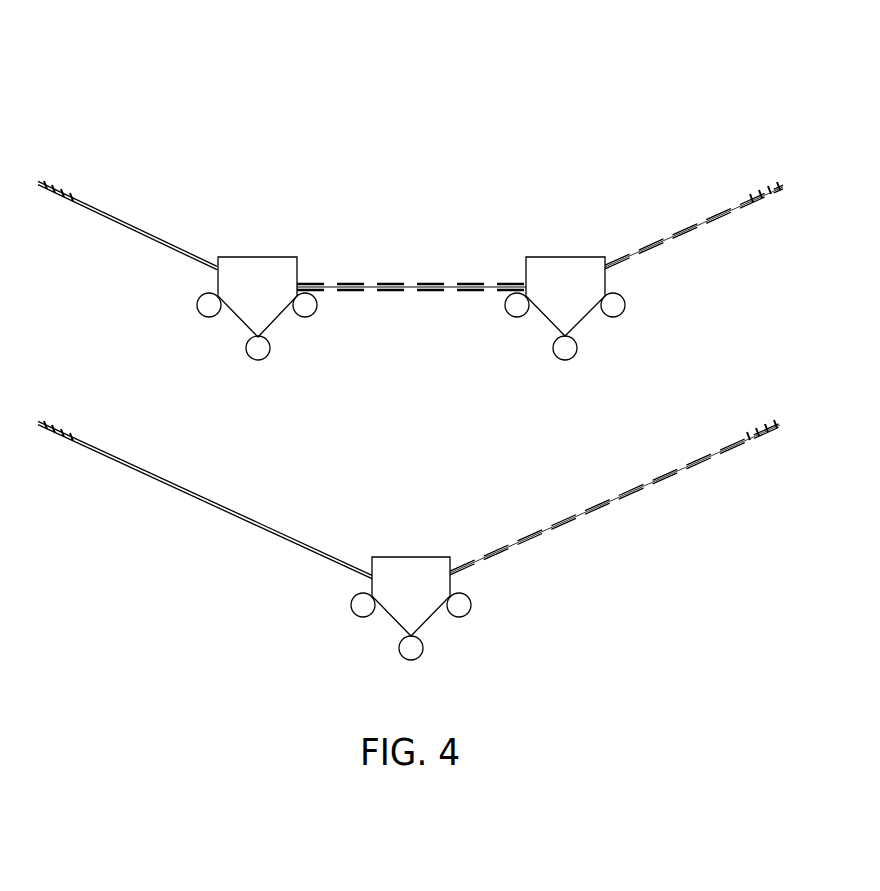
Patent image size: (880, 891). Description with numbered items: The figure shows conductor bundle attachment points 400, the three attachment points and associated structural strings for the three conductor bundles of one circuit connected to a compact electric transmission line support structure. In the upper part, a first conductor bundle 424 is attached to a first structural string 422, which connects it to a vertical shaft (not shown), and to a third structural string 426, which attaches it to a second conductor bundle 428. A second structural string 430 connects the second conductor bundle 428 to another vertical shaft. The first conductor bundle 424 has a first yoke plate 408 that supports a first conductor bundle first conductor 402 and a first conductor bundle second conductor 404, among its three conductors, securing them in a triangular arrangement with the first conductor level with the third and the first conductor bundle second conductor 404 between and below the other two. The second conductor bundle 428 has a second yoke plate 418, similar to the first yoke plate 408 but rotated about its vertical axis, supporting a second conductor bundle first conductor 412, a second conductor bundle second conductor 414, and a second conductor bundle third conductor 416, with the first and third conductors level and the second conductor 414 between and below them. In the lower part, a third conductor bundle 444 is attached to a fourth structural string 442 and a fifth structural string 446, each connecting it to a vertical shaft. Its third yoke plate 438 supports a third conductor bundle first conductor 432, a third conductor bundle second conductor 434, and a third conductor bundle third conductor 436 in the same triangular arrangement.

The conductor bundle attachment points 400 is at (203, 110).
The first conductor bundle first conductor 402 is at (208, 318).
The first conductor bundle second conductor 404 is at (259, 361).
The first yoke plate 408 is at (257, 257).
The second conductor bundle first conductor 412 is at (516, 318).
The second conductor bundle second conductor 414 is at (565, 361).
The second conductor bundle third conductor 416 is at (614, 318).
The second yoke plate 418 is at (565, 257).
The first structural string 422 is at (169, 243).
The first conductor bundle 424 is at (298, 250).
The third structural string 426 is at (413, 283).
The second conductor bundle 428 is at (523, 247).
The second structural string 430 is at (680, 230).
The third conductor bundle first conductor 432 is at (362, 618).
The third conductor bundle second conductor 434 is at (411, 661).
The third conductor bundle third conductor 436 is at (460, 618).
The third yoke plate 438 is at (410, 557).
The fourth structural string 442 is at (277, 538).
The third conductor bundle 444 is at (437, 542).
The fifth structural string 446 is at (548, 537).